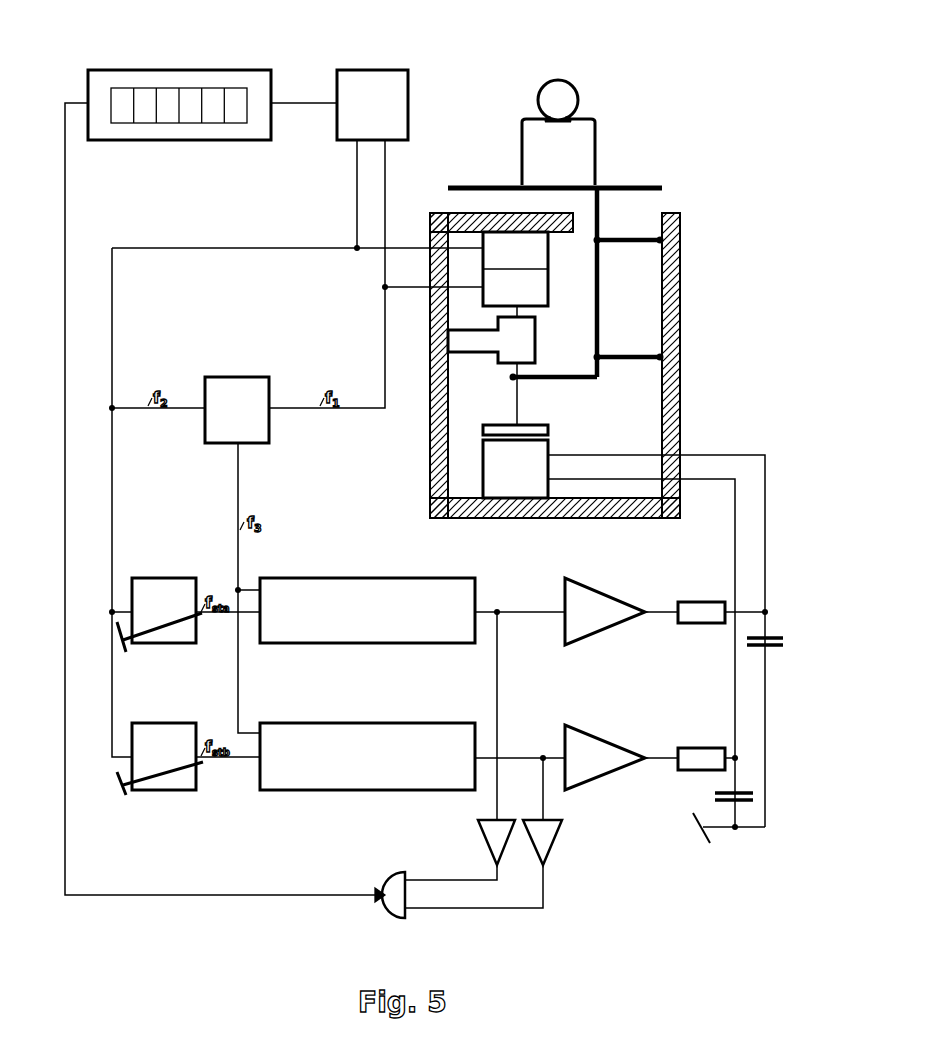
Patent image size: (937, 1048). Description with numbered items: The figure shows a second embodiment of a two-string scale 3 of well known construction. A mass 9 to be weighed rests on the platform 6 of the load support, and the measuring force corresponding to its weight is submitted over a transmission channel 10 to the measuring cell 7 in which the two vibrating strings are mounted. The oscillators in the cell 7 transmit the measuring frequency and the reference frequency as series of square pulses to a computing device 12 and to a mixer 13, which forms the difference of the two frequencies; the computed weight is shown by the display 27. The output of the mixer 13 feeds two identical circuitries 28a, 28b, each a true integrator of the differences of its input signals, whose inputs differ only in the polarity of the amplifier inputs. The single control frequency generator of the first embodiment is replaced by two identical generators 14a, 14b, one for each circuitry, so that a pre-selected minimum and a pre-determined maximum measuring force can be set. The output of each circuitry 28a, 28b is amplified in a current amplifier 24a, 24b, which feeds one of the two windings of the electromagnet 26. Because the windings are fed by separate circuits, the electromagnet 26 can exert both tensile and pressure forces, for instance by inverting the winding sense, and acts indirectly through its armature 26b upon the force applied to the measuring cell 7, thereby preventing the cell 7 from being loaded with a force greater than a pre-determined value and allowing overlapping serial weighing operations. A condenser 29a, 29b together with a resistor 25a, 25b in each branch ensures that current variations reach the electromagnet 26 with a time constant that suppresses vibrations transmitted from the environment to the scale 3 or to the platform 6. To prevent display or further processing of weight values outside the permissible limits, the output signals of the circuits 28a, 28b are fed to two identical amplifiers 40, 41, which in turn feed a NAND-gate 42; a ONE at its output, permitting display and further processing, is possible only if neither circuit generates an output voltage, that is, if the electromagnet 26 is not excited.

The scale 3 is at (633, 428).
The platform 6 is at (640, 187).
The measuring cell 7 is at (548, 268).
The mass 9 is at (573, 135).
The transmission channel 10 is at (525, 340).
The computing device 12 is at (372, 80).
The mixer 13 is at (225, 414).
The control frequency generator 14a is at (152, 617).
The control frequency generator 14b is at (152, 760).
The current amplifier 24a is at (592, 605).
The current amplifier 24b is at (592, 752).
The resistor 25a is at (688, 610).
The resistor 25b is at (687, 755).
The electromagnet 26 is at (520, 453).
The armature 26b is at (532, 430).
The display 27 is at (228, 75).
The circuitry 28a is at (318, 645).
The circuitry 28b is at (318, 790).
The condenser 29a is at (773, 638).
The condenser 29b is at (740, 790).
The amplifier 40 is at (493, 833).
The amplifier 41 is at (543, 847).
The NAND-gate 42 is at (395, 905).